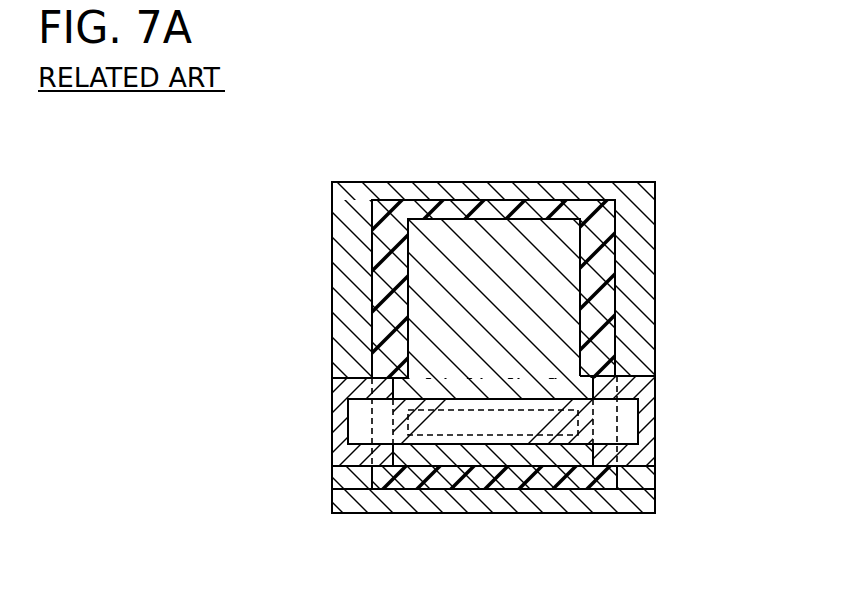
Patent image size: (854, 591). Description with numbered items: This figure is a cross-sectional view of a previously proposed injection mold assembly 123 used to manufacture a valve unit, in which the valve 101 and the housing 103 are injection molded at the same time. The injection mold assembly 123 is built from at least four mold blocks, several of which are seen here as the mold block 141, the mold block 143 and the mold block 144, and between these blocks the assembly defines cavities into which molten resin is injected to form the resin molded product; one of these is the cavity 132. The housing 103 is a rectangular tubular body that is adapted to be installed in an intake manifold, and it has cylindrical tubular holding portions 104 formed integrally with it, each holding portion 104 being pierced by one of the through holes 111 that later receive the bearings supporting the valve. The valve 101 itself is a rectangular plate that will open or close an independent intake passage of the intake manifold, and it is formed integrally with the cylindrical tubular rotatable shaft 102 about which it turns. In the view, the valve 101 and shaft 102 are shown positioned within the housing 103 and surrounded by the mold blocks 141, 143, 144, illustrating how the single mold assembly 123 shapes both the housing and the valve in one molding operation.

The valve 101 is at (480, 436).
The rotatable shaft 102 is at (558, 398).
The housing 103 is at (497, 199).
The holding portions 104 is at (390, 370).
The through holes 111 is at (390, 466).
The injection mold assembly 123 is at (345, 166).
The cavity 132 is at (582, 476).
The mold block 141 is at (397, 503).
The mold block 143 is at (338, 418).
The mold block 144 is at (656, 413).